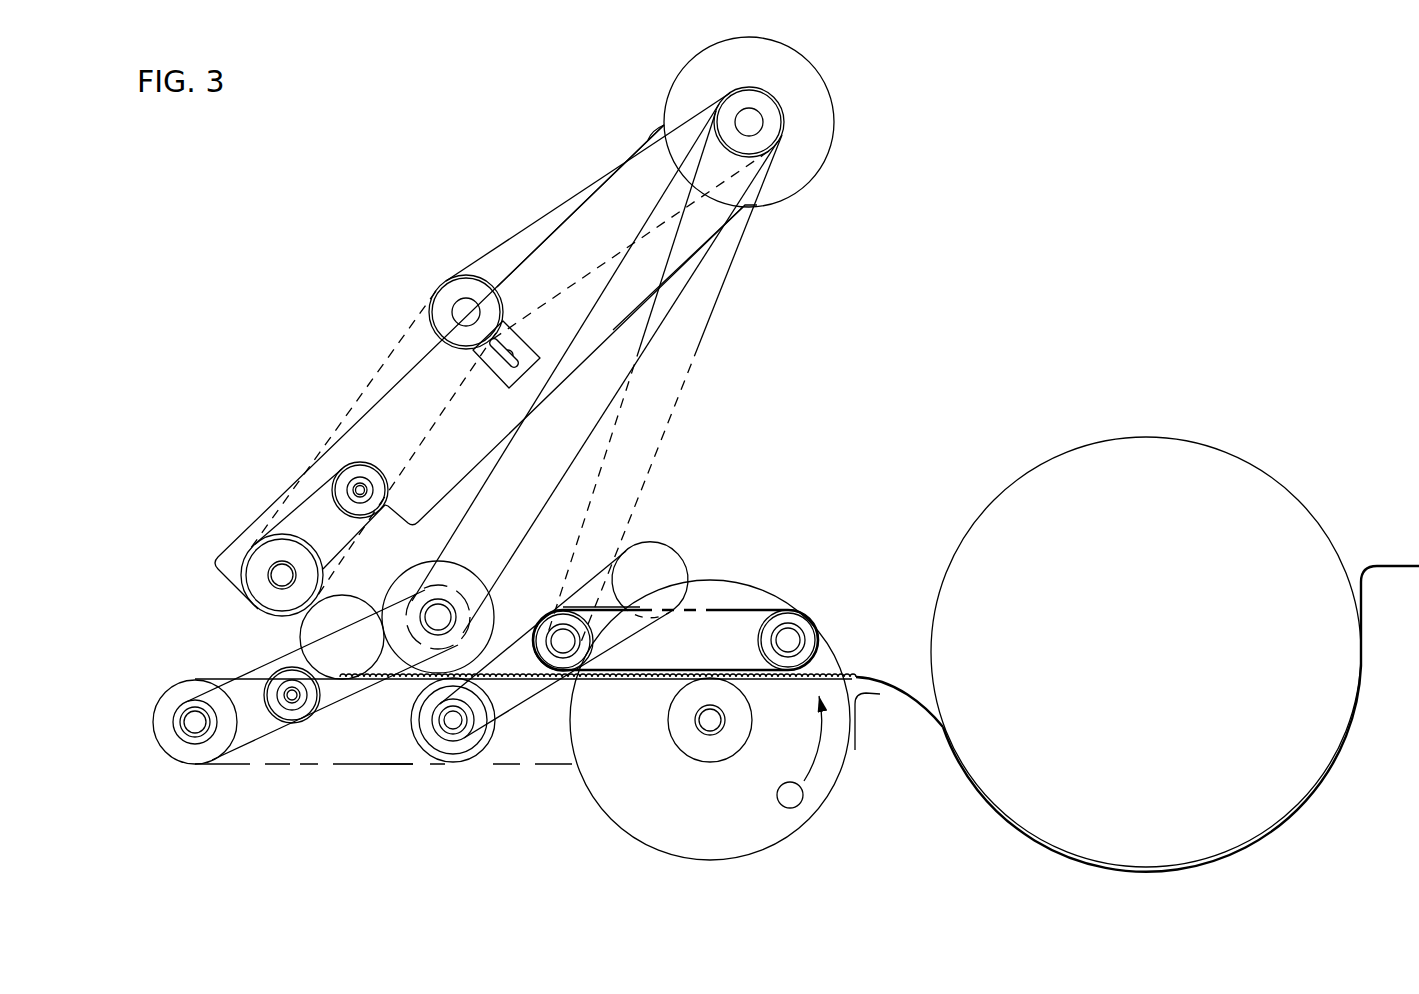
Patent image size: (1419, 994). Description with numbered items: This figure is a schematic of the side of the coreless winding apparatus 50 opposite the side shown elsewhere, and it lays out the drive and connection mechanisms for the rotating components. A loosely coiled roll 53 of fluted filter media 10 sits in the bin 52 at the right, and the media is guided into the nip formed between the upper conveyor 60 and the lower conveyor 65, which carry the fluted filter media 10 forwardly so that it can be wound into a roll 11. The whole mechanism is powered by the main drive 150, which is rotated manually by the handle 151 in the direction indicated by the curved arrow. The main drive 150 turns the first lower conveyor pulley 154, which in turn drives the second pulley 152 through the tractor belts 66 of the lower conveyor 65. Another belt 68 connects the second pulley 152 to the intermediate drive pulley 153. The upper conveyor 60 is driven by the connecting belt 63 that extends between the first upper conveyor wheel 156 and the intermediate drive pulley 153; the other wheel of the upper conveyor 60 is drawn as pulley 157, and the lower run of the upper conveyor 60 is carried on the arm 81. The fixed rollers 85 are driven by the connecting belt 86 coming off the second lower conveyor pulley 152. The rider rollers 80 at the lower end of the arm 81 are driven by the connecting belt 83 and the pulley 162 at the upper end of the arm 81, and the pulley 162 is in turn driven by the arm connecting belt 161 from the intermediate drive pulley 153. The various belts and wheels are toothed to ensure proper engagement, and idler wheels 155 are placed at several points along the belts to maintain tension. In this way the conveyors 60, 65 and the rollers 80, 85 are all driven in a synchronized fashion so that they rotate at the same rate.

The fluted filter media 10 is at (868, 677).
The roll 11 is at (296, 633).
The coreless winding apparatus 50 is at (896, 340).
The bin 52 is at (1373, 568).
The loosely coiled roll 53 is at (1057, 456).
The upper conveyor 60 is at (720, 608).
The connecting belt 63 is at (603, 606).
The lower conveyor 65 is at (342, 768).
The tractor belts 66 is at (392, 767).
The belt 68 is at (248, 767).
The rider rollers 80 is at (252, 542).
The arm 81 is at (405, 375).
The connecting belt 83 is at (558, 200).
The fixed rollers 85 is at (460, 560).
The connecting belt 86 is at (272, 665).
The main drive 150 is at (608, 821).
The handle 151 is at (800, 806).
The second pulley 152 is at (170, 757).
The intermediate drive pulley 153 is at (450, 764).
The first lower conveyor pulley 154 is at (727, 752).
The idler wheels 155 is at (447, 290).
The first upper conveyor wheel 156 is at (562, 610).
The pulley 157 is at (797, 615).
The arm connecting belt 161 is at (675, 348).
The pulley 162 is at (783, 122).